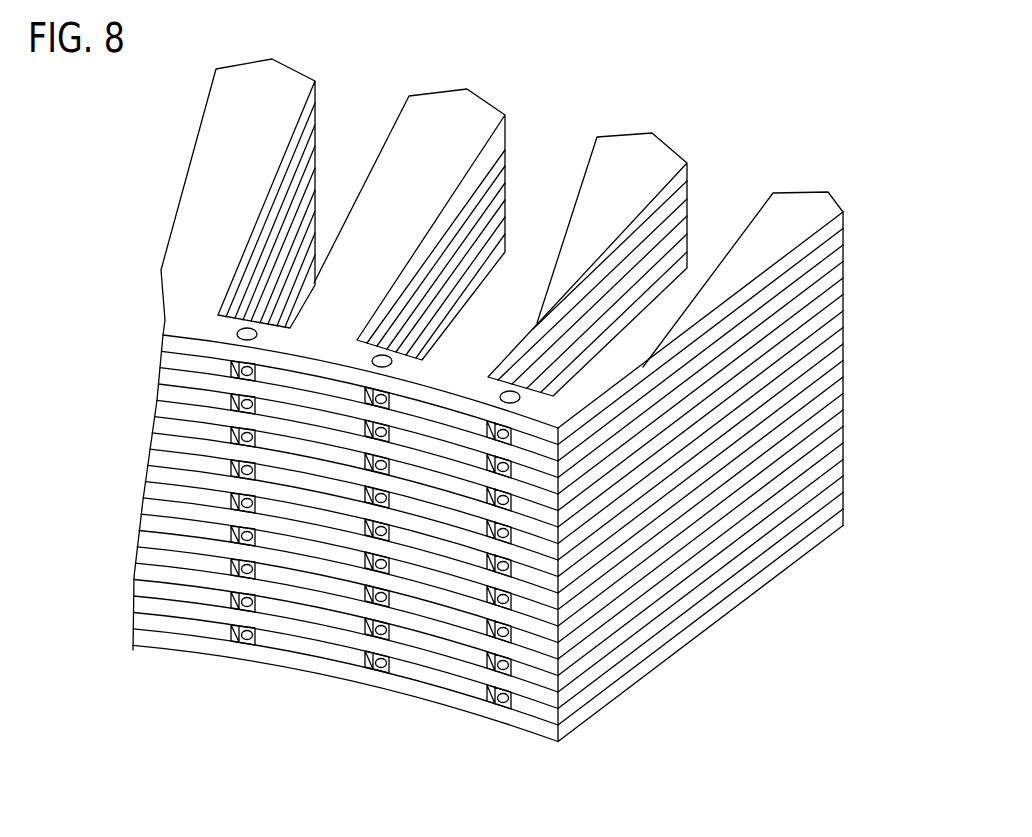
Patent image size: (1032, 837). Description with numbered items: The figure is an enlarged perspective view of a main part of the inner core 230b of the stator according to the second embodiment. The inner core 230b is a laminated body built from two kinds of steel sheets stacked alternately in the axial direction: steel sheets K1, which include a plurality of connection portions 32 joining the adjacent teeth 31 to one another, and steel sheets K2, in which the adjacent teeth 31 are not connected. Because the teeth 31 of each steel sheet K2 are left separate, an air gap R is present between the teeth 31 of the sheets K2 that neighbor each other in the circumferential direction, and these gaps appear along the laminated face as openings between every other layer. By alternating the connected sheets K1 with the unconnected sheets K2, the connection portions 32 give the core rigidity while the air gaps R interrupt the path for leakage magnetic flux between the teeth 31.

The inner core 230b is at (450, 400).
The teeth 31 is at (639, 168).
The connection portion 32 is at (380, 347).
The air gap R is at (233, 402).
The steel sheets K1 is at (597, 377).
The steel sheets K2 is at (578, 437).